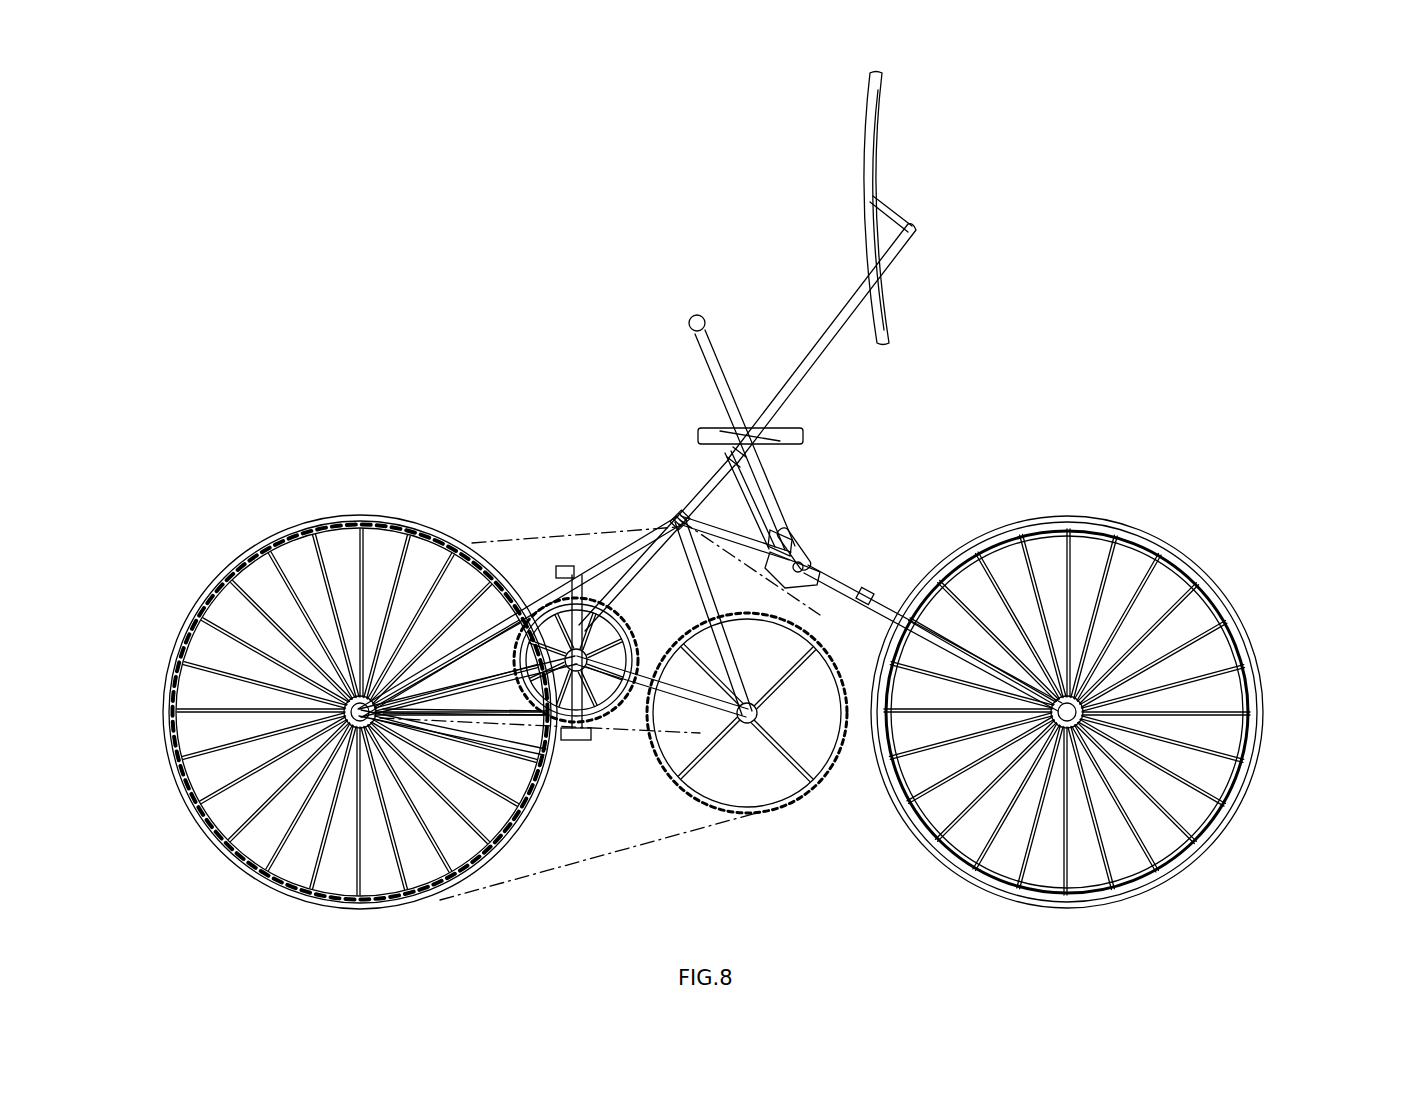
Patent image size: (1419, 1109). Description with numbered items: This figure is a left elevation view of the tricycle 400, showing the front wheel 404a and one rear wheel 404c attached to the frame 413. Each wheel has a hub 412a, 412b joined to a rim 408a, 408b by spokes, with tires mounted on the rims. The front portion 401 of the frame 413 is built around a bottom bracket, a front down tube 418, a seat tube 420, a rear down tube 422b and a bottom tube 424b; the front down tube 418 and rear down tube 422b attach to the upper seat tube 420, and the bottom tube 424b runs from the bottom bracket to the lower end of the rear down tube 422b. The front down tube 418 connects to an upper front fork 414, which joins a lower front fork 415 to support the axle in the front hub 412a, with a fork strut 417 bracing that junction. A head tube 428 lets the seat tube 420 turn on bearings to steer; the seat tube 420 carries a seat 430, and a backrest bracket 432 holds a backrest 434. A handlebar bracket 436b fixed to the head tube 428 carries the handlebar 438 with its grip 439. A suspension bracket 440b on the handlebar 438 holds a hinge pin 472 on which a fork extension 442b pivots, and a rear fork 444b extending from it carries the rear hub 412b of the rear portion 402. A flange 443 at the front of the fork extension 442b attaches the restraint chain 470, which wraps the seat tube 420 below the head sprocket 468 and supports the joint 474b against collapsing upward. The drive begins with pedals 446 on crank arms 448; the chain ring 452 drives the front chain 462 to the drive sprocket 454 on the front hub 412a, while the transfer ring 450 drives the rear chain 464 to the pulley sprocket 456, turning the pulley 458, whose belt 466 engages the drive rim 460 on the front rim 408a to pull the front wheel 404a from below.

The tricycle 400 is at (512, 188).
The front portion of the frame 401 is at (280, 443).
The rear portion of the frame 402 is at (1222, 455).
The front wheel 404a is at (360, 677).
The rear wheel 404c is at (1108, 690).
The front rim 408a is at (440, 533).
The rear rim 408b is at (1240, 778).
The front hub 412a is at (343, 657).
The rear hub 412b is at (1060, 680).
The frame 413 is at (647, 518).
The upper front fork 414 is at (483, 640).
The lower front fork 415 is at (377, 727).
The fork strut 417 is at (567, 613).
The front down tube 418 is at (597, 580).
The seat tube 420 is at (653, 557).
The rear down tube 422b is at (700, 597).
The bottom tube 424b is at (695, 733).
The head tube 428 is at (707, 487).
The seat 430 is at (800, 436).
The backrest bracket 432 is at (818, 356).
The backrest 434 is at (858, 213).
The handlebar bracket 436b is at (757, 533).
The handlebar 438 is at (762, 465).
The grip 439 is at (708, 322).
The suspension bracket 440b is at (817, 557).
The fork extension 442b is at (847, 600).
The flange 443 is at (762, 578).
The rear fork 444b is at (942, 638).
The pedal 446 is at (558, 560).
The crank arm 448 is at (587, 613).
The transfer ring 450 is at (607, 711).
The chain ring 452 is at (628, 635).
The drive sprocket 454 is at (373, 730).
The pulley sprocket 456 is at (765, 716).
The pulley 458 is at (774, 740).
The drive rim 460 is at (505, 763).
The front chain 462 is at (463, 683).
The rear chain 464 is at (697, 700).
The belt 466 is at (556, 862).
The head sprocket 468 is at (678, 515).
The restraint chain 470 is at (715, 547).
The hinge pin 472 is at (808, 566).
The joint 474b is at (828, 528).